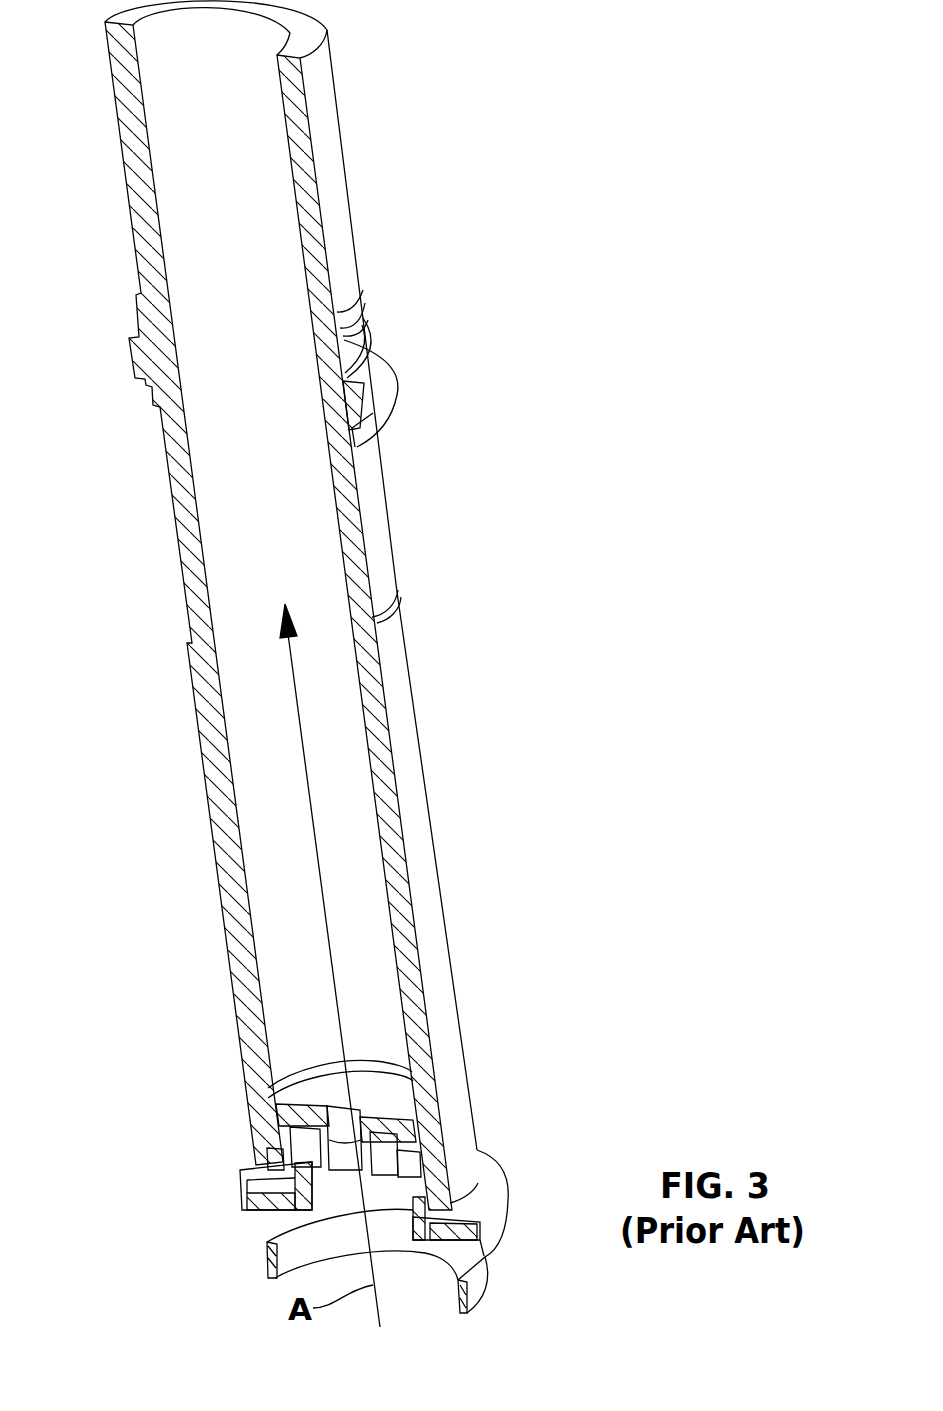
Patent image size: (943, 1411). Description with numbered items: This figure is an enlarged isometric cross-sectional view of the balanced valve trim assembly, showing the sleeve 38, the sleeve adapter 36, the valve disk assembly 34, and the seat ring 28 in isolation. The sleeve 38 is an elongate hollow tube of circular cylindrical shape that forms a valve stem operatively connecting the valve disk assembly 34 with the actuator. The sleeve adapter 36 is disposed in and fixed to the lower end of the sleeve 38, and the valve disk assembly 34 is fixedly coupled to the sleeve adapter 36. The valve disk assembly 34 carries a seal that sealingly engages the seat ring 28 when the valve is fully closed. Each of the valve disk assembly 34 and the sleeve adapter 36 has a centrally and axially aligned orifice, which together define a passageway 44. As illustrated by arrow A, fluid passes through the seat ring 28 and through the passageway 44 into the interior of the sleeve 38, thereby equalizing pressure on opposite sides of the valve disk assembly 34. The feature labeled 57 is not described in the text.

The seat ring 28 is at (478, 1292).
The valve disk assembly 34 is at (243, 1187).
The sleeve adapter 36 is at (335, 1107).
The sleeve 38 is at (428, 884).
The passageway 44 is at (335, 1068).
The boss 57 is at (382, 384).